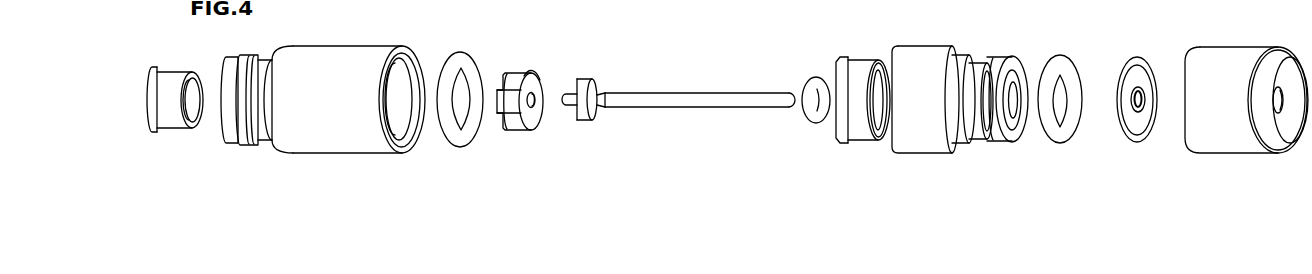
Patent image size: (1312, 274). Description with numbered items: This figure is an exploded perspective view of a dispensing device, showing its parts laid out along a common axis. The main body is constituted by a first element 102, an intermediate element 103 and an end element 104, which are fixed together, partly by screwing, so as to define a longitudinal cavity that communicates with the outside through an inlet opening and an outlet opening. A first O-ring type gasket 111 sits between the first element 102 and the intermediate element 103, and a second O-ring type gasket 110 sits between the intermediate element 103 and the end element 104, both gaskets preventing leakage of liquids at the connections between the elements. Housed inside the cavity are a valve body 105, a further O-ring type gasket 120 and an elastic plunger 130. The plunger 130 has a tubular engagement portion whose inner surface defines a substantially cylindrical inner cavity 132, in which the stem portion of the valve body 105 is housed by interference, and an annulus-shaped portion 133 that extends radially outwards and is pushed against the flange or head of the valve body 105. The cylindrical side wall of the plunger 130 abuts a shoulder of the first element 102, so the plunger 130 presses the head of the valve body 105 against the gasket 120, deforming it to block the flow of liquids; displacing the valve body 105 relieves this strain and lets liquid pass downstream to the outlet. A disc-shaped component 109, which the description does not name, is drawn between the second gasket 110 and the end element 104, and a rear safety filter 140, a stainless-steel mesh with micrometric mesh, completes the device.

The first element 102 is at (323, 155).
The intermediate element 103 is at (929, 155).
The end element 104 is at (1252, 155).
The valve body 105 is at (683, 110).
The disc 109 is at (1130, 143).
The second O-ring type gasket 110 is at (1060, 145).
The first O-ring type gasket 111 is at (458, 148).
The O-ring type gasket 120 is at (817, 125).
The plunger 130 is at (556, 118).
The inner cavity 132 is at (535, 100).
The annulus-shaped portion 133 is at (534, 80).
The rear safety filter 140 is at (178, 132).